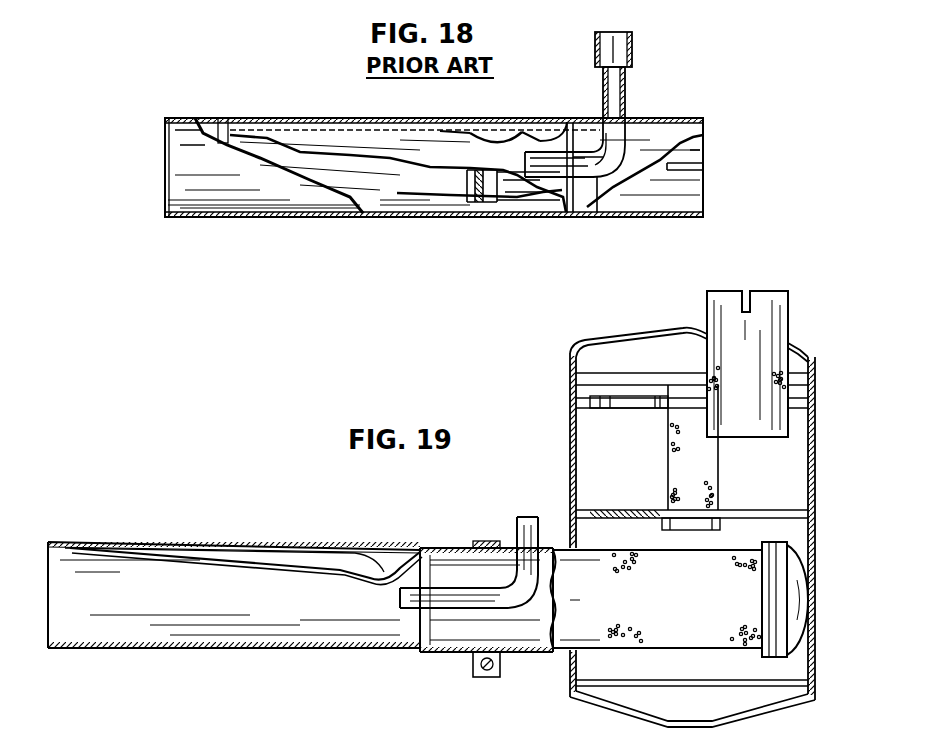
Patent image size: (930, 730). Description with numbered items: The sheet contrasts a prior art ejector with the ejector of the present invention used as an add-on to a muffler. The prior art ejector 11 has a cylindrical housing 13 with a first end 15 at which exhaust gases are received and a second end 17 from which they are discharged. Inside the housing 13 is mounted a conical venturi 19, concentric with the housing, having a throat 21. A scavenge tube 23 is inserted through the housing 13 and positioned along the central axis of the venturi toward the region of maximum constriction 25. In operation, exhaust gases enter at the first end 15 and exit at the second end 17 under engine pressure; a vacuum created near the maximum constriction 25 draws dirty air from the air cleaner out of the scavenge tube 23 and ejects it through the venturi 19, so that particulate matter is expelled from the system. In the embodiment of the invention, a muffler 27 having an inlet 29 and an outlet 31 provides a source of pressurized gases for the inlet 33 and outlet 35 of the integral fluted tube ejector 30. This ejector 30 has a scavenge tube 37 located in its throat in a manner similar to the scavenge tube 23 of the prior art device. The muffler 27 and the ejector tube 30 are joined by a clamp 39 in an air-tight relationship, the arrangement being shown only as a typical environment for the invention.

In FIG. 18, the ejector 11 is at (192, 270).
In FIG. 18, the cylindrical housing 13 is at (270, 204).
In FIG. 18, the first end 15 is at (703, 138).
In FIG. 18, the second end 17 is at (165, 182).
In FIG. 18, the conical venturi 19 is at (497, 203).
In FIG. 18, the throat 21 is at (513, 138).
In FIG. 18, the scavenge tube 23 is at (607, 180).
In FIG. 18, the region of maximum constriction 25 is at (470, 197).
In FIG. 19, the muffler 27 is at (560, 392).
In FIG. 19, the inlet 29 is at (712, 290).
In FIG. 19, the integral fluted tube ejector 30 is at (228, 655).
In FIG. 19, the outlet 31 is at (546, 652).
In FIG. 19, the inlet 33 is at (468, 655).
In FIG. 19, the outlet 35 is at (48, 650).
In FIG. 19, the scavenge tube 37 is at (517, 523).
In FIG. 19, the clamp 39 is at (487, 679).